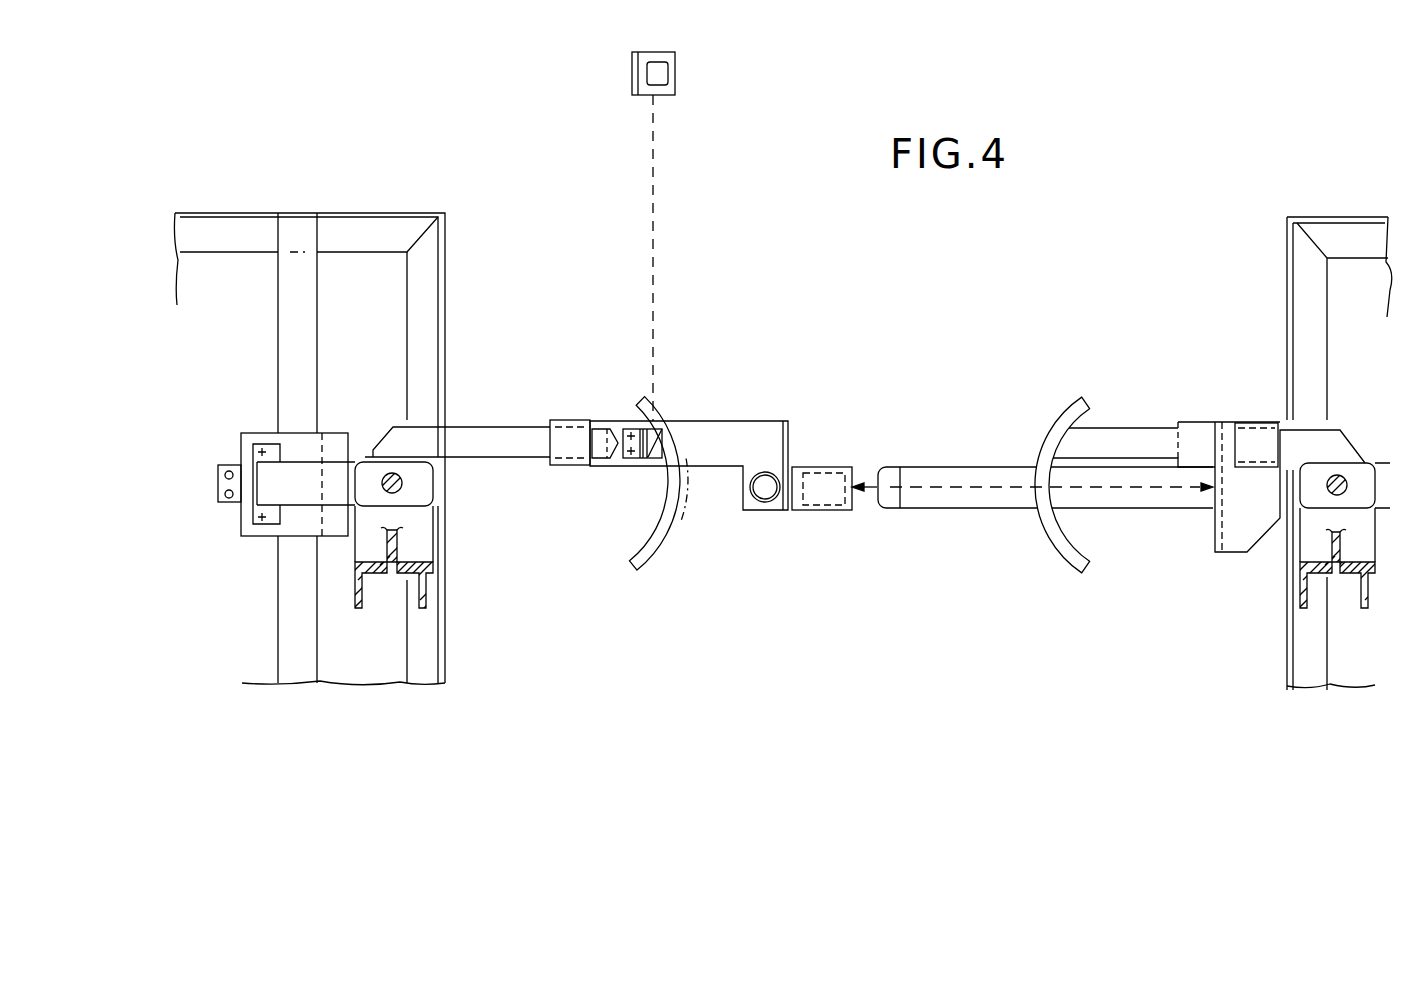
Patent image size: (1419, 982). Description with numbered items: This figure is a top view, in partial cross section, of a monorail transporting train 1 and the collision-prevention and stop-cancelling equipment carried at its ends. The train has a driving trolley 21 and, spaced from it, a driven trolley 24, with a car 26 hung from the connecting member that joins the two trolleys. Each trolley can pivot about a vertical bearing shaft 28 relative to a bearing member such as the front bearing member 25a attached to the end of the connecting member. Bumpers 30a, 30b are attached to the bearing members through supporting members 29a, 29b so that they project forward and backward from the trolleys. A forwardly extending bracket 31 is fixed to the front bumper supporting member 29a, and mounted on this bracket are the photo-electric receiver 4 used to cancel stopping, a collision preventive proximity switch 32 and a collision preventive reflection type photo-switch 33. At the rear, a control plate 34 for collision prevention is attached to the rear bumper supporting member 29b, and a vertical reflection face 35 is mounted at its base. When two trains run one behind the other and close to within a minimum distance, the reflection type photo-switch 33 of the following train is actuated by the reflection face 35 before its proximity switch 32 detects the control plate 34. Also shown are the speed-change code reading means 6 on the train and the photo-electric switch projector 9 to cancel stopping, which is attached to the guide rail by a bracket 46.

The train 1 is at (462, 600).
The photo-electric receiver 4 is at (645, 470).
The speed-change code reading means 6 is at (222, 500).
The photo-electric switch projector 9 is at (668, 72).
The driving trolley 21 is at (433, 570).
The driven trolley 24 is at (1343, 573).
The bearing member 25a is at (317, 477).
The car 26 is at (352, 212).
The vertical bearing shaft 28 is at (403, 484).
The supporting member 29a is at (503, 433).
The supporting member 29b is at (1138, 437).
The bumper 30a is at (662, 545).
The bumper 30b is at (1062, 550).
The bracket 31 is at (728, 432).
The collision preventive proximity switch 32 is at (765, 502).
The collision preventive reflection type photo-switch 33 is at (827, 510).
The control plate 34 is at (930, 503).
The vertical reflection face 35 is at (1213, 495).
The bracket 46 is at (632, 72).